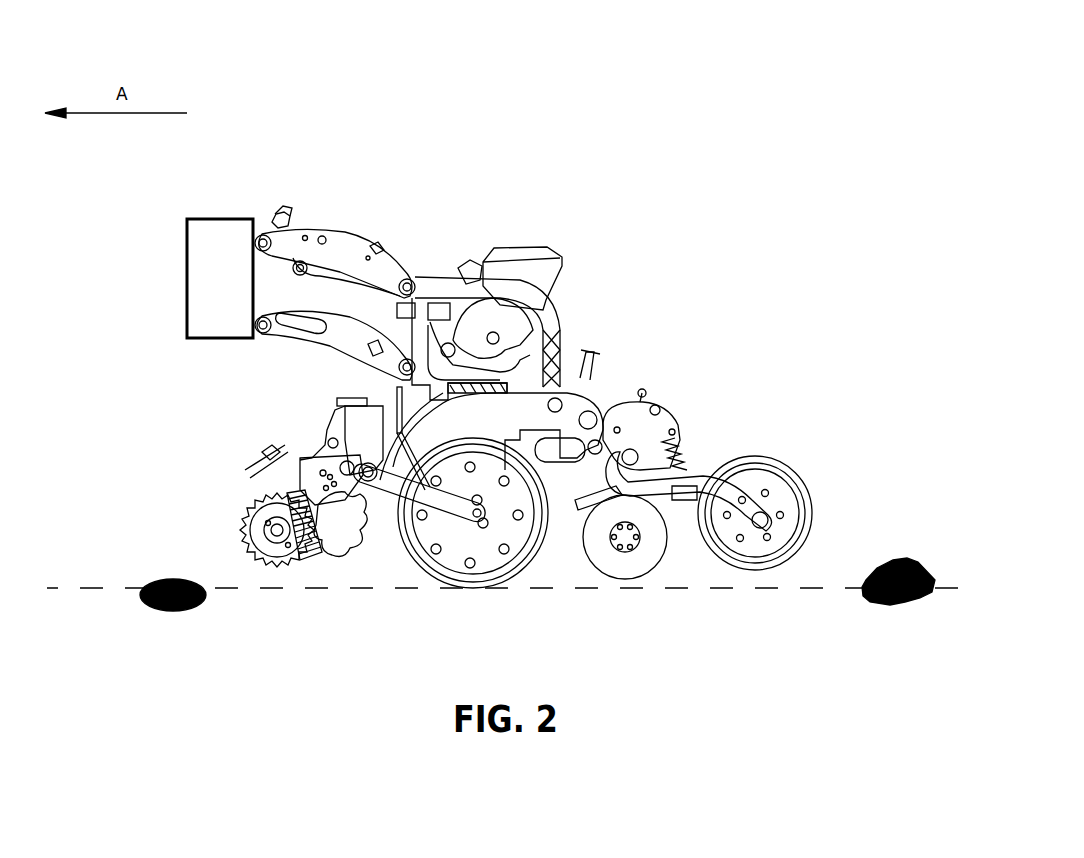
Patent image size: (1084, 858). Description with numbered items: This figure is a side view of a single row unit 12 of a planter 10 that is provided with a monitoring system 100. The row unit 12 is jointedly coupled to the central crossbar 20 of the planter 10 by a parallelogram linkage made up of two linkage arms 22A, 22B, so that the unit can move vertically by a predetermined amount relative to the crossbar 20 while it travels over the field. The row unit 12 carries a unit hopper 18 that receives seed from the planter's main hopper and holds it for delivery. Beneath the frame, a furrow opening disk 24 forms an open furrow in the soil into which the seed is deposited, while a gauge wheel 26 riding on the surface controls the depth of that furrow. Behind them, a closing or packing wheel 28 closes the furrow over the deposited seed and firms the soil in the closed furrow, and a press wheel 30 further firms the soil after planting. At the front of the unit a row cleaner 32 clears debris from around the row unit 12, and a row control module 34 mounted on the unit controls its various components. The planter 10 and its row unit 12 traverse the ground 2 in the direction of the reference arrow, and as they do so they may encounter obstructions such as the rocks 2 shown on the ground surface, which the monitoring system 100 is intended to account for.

The monitoring system 100 is at (678, 55).
The planter 10 is at (732, 92).
The row unit 12 is at (770, 135).
The ground / rock 2 is at (165, 612).
The hopper 18 is at (513, 250).
The central crossbar 20 is at (234, 252).
The linkage arm 22A is at (352, 244).
The linkage arm 22B is at (323, 338).
The furrow opening disk 24 is at (437, 563).
The gauge wheel 26 is at (523, 570).
The closing wheel / packing wheel 28 is at (638, 560).
The press wheel 30 is at (397, 310).
The row cleaner 32 is at (310, 573).
The row control module 34 is at (278, 216).